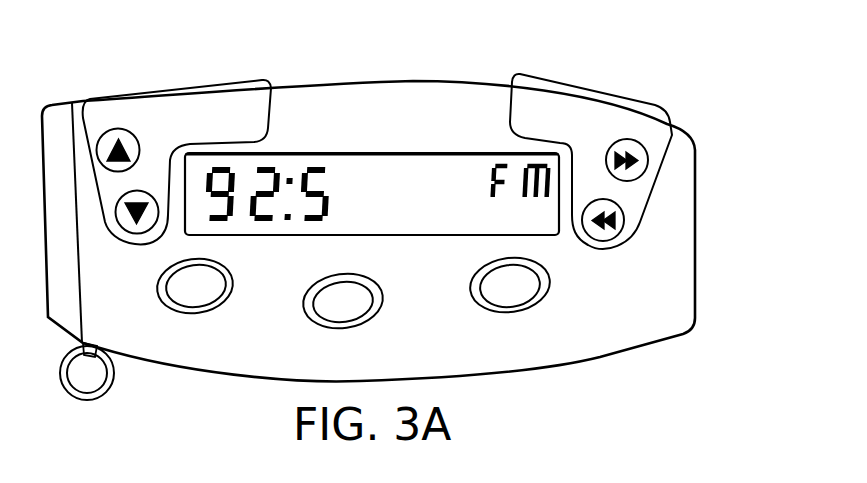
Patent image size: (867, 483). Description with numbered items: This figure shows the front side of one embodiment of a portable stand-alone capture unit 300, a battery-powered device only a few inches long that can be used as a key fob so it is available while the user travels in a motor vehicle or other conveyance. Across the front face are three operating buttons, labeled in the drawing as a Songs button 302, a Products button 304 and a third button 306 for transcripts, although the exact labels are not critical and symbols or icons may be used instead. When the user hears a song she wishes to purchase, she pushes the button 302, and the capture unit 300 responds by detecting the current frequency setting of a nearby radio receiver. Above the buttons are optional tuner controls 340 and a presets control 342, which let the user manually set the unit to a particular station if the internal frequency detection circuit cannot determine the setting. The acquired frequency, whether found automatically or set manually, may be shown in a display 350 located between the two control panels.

The capture unit 300 is at (678, 252).
The Songs button 302 is at (205, 267).
The Products button 304 is at (350, 282).
The Other button 306 is at (538, 270).
The tuner controls 340 is at (597, 85).
The presets control 342 is at (177, 83).
The display 350 is at (387, 167).